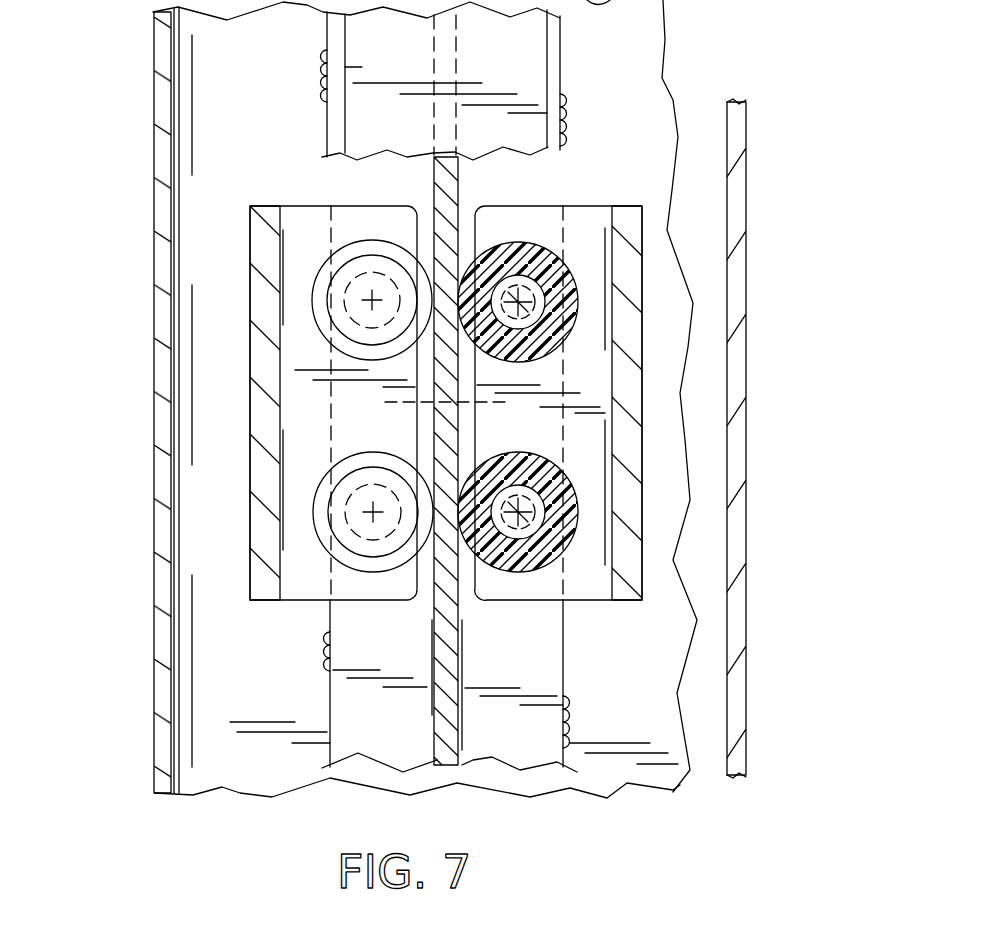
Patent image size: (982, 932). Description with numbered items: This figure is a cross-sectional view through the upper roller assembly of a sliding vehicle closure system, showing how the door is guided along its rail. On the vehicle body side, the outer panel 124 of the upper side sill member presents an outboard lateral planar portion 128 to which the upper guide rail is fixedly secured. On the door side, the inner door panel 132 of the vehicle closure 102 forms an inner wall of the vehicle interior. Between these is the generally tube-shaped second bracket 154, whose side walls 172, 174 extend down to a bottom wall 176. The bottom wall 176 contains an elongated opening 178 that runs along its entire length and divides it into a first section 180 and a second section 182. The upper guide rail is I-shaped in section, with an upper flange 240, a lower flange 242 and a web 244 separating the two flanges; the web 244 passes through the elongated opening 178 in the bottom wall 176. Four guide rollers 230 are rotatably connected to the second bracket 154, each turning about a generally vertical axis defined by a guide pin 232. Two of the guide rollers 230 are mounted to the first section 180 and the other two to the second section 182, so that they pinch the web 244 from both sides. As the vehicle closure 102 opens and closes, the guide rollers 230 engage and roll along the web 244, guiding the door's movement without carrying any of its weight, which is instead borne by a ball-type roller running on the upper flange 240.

The vehicle closure 102 is at (748, 675).
The outer panel 124 is at (162, 357).
The outboard lateral planar portion 128 is at (262, 765).
The inner door panel 132 is at (740, 607).
The second bracket 154 is at (250, 424).
The side wall 172 is at (262, 472).
The side wall 174 is at (633, 411).
The bottom wall 176 is at (513, 597).
The elongated opening 178 is at (418, 580).
The first section 180 is at (387, 217).
The second section 182 is at (588, 223).
The guide rollers 230 is at (312, 300).
The guide pin 232 is at (355, 285).
The upper flange 240 is at (532, 63).
The lower flange 242 is at (528, 753).
The web 244 is at (443, 733).